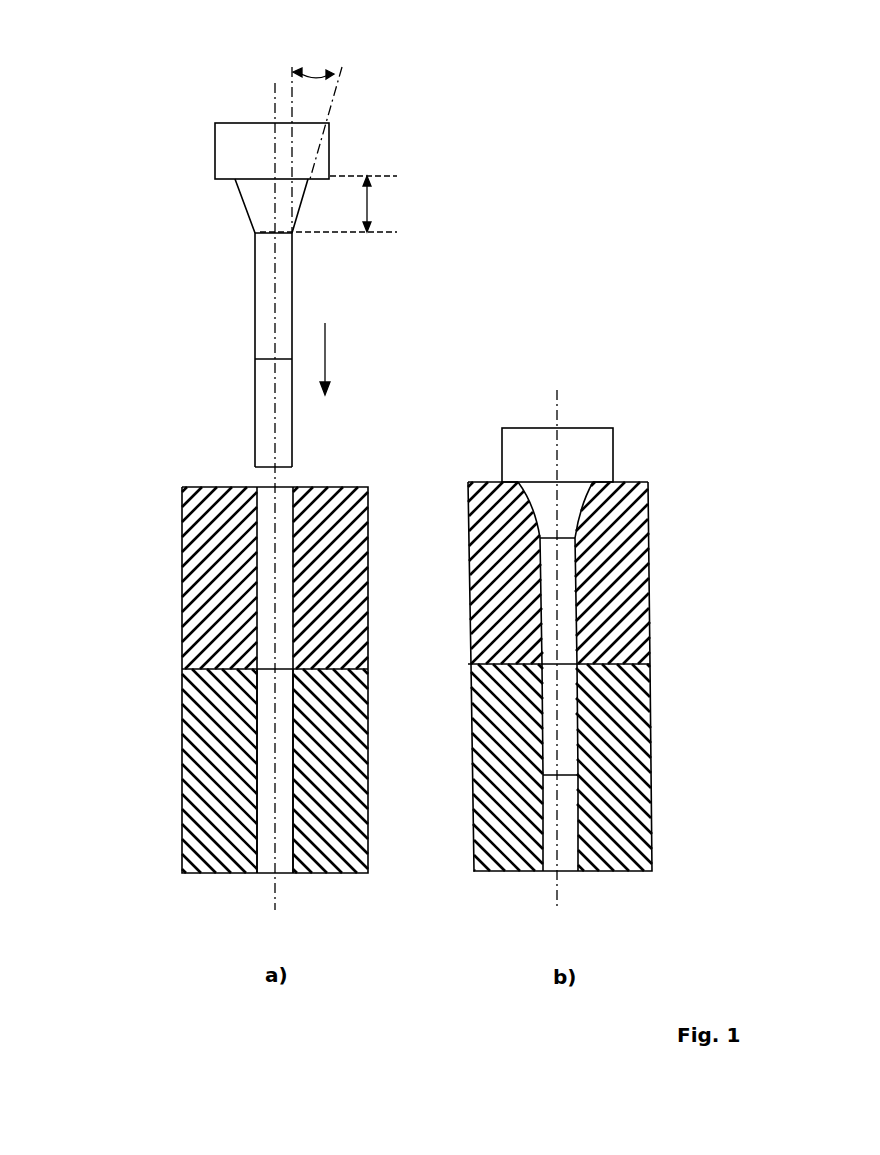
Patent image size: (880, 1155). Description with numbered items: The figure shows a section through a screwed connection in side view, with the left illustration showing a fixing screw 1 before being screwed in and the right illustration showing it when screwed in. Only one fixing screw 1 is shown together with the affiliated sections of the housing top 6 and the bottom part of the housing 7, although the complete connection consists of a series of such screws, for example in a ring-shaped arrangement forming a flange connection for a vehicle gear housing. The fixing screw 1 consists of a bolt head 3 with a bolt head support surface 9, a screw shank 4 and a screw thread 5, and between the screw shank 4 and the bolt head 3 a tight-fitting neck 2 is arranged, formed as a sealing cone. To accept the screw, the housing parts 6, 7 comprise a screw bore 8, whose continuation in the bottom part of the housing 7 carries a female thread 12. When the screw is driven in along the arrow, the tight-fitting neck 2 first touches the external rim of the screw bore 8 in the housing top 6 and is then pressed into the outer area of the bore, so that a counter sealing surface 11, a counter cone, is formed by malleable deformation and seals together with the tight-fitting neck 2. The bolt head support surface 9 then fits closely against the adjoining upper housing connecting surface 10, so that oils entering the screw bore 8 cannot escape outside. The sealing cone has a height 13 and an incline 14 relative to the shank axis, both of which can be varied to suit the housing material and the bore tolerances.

The fixing screw 1 is at (230, 252).
The tight-fitting neck 2 is at (243, 210).
The bolt head 3 is at (215, 150).
The screw shank 4 is at (255, 298).
The screw thread 5 is at (255, 415).
The housing top 6 is at (220, 585).
The bottom part of the housing 7 is at (218, 740).
The screw bore 8 is at (266, 822).
The bolt head support surface 9 is at (490, 502).
The upper housing connecting surface 10 is at (503, 475).
The counter sealing surface 11 is at (595, 516).
The female thread 12 is at (258, 698).
The height 13 is at (370, 200).
The incline 14 is at (315, 70).